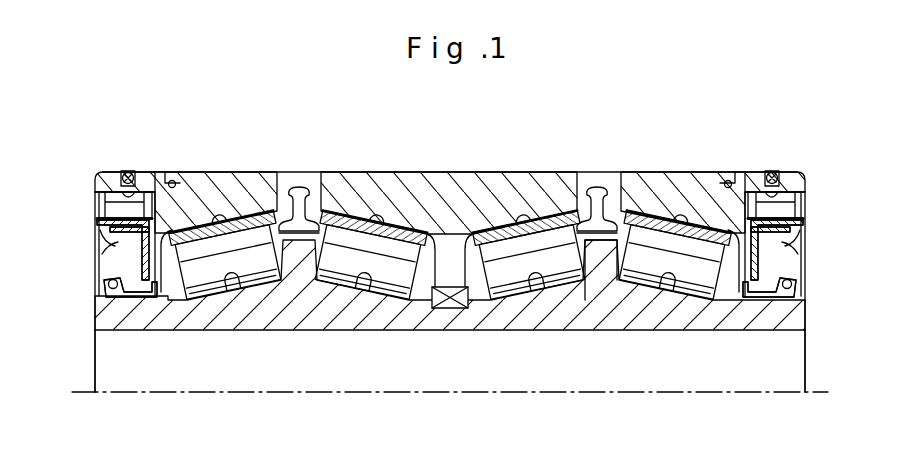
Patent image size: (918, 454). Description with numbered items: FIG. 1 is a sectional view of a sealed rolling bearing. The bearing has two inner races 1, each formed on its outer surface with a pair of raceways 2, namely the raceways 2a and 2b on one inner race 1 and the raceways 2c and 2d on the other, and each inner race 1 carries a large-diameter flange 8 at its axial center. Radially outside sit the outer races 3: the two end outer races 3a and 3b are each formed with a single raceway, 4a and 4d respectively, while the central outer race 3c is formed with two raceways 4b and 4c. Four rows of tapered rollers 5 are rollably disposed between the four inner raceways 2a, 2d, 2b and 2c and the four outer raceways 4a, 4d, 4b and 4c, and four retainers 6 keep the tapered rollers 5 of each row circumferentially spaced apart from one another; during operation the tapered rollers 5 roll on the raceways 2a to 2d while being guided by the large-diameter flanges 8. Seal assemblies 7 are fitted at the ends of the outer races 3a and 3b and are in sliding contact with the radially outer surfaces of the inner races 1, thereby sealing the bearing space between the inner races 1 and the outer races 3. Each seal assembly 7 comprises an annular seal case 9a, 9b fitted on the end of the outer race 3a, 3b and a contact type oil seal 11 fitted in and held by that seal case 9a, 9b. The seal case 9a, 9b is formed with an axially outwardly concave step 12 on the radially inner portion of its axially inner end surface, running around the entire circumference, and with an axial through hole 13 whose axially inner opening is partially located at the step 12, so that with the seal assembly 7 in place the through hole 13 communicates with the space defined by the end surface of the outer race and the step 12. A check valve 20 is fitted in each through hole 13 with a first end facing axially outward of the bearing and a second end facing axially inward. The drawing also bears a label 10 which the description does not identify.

The inner race 1 is at (727, 320).
The raceways 2 is at (450, 285).
The raceway 2a is at (662, 280).
The raceway 2b is at (528, 276).
The raceway 2c is at (387, 272).
The raceway 2d is at (238, 284).
The outer races 3 is at (450, 166).
The outer race 3a is at (650, 186).
The outer race 3b is at (254, 186).
The outer race 3c is at (410, 190).
The raceway 4a is at (692, 216).
The raceway 4b is at (538, 205).
The raceway 4c is at (361, 205).
The raceway 4d is at (222, 208).
The tapered rollers 5 is at (394, 300).
The retainer 6 is at (553, 205).
The seal assembly 7 is at (96, 212).
The large-diameter flange 8 is at (600, 245).
The seal case 9a is at (795, 181).
The seal case 9b is at (106, 181).
The seal lip 10 is at (125, 233).
The contact type oil seal 11 is at (133, 256).
The step 12 is at (174, 181).
The through hole 13 is at (136, 186).
The check valve 20 is at (98, 197).